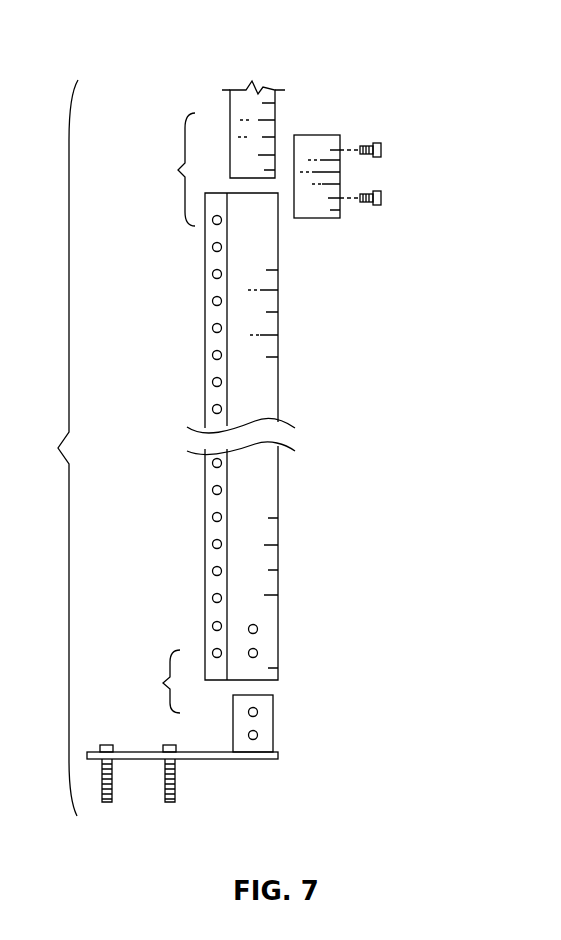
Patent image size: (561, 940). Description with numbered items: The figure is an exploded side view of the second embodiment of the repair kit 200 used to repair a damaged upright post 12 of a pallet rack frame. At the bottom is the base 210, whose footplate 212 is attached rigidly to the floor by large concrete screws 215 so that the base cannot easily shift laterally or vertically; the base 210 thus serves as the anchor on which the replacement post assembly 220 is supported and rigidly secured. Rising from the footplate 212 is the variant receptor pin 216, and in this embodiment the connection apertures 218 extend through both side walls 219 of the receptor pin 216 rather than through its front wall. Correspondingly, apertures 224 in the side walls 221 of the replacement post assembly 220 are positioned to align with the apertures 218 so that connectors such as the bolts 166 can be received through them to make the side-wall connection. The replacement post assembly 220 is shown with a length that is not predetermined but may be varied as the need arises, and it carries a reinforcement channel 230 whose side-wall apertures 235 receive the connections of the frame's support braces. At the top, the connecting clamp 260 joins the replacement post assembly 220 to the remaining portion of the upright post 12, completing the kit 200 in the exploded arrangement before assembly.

The repair kit 200 is at (44, 448).
The upright post 12 is at (268, 110).
The connecting clamp 260 is at (381, 128).
The bolts 166 is at (370, 147).
The replacement post assembly 220 is at (258, 436).
The side walls 221 is at (267, 528).
The reinforcement channel 230 is at (213, 291).
The apertures 235 is at (212, 571).
The apertures 224 is at (258, 628).
The base 210 is at (182, 742).
The footplate 212 is at (135, 752).
The concrete screws 215 is at (107, 745).
The receptor pin 216 is at (230, 720).
The apertures 218 is at (258, 711).
The side walls 219 is at (230, 770).